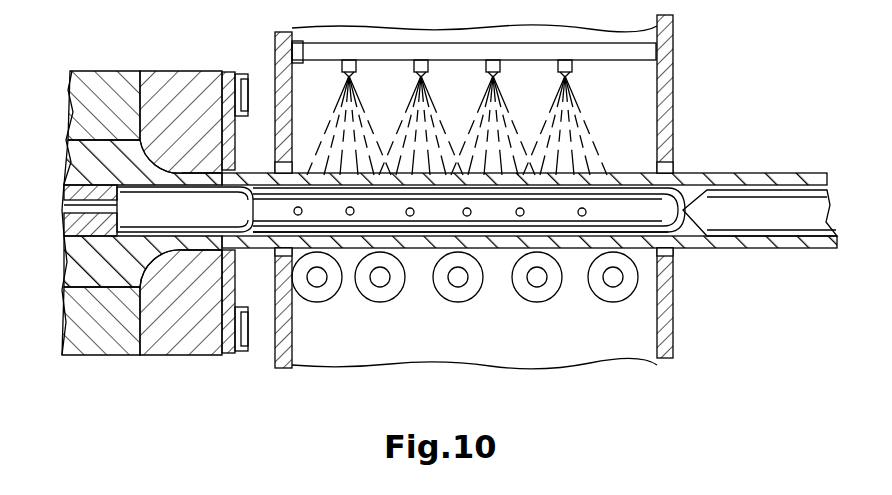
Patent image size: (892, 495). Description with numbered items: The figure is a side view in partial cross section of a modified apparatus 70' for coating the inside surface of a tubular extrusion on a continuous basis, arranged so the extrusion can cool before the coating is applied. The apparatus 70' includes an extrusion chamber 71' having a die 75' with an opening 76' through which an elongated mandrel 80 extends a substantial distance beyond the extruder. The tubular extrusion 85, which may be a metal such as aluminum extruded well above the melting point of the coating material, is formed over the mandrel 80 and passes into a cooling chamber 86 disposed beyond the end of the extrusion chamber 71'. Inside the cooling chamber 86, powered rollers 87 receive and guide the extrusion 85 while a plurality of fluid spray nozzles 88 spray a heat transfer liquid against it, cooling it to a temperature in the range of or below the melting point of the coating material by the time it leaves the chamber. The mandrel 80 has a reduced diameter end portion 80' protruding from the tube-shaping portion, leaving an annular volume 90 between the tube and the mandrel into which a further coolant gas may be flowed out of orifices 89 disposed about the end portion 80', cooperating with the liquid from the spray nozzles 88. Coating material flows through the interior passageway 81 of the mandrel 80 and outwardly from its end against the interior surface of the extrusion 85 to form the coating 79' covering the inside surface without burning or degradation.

The apparatus 70' is at (141, 188).
The extrusion chamber 71' is at (104, 80).
The die 75' is at (181, 97).
The opening 76' is at (204, 302).
The coating 79' is at (760, 213).
The mandrel 80 is at (185, 209).
The reduced diameter end portion 80' is at (490, 237).
The interior passageway 81 is at (62, 212).
The extrusion 85 is at (790, 173).
The cooling chamber 86 is at (672, 28).
The powered rollers 87 is at (538, 302).
The fluid spray nozzles 88 is at (574, 68).
The orifices 89 is at (350, 216).
The annular volume 90 is at (411, 234).